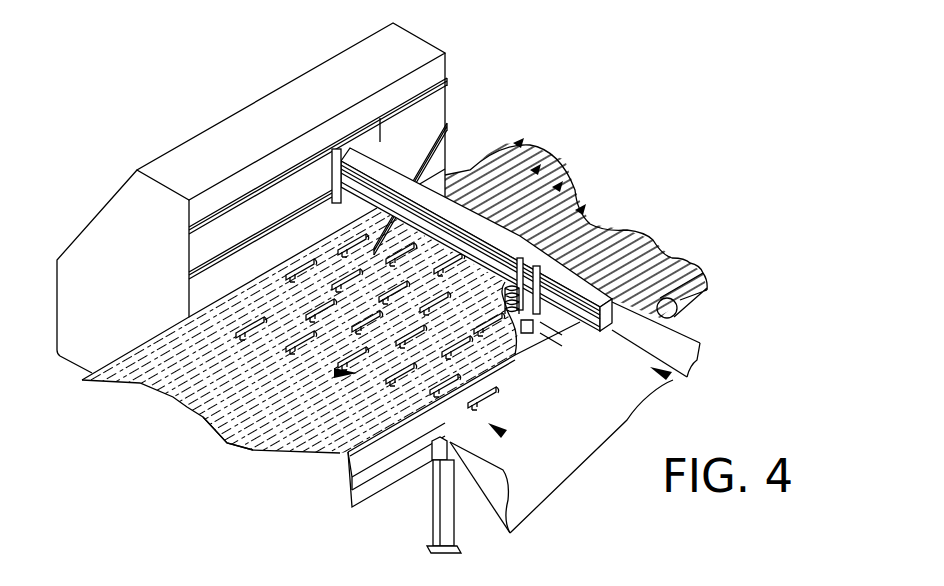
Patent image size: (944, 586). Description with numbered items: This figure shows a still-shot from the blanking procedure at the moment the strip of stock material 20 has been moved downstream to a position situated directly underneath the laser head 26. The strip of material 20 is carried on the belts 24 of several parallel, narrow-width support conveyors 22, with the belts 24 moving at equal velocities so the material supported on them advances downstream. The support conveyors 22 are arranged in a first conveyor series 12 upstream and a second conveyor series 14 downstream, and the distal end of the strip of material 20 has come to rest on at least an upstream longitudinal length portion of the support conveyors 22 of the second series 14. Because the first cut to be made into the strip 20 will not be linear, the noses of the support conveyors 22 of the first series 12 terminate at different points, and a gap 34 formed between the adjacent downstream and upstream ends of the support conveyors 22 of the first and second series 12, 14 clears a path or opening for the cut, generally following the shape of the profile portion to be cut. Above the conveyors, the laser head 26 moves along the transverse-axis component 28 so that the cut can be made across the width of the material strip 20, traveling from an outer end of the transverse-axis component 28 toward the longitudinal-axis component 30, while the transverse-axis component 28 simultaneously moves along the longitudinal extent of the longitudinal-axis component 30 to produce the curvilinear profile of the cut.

The first conveyor series 12 is at (501, 434).
The second conveyor series 14 is at (670, 377).
The strip of stock material 20 is at (117, 383).
The support conveyors 22 is at (582, 209).
The belts 24 is at (235, 440).
The laser head 26 is at (547, 313).
The transverse-axis component 28 is at (430, 187).
The longitudinal-axis component 30 is at (333, 73).
The gap 34 is at (533, 380).